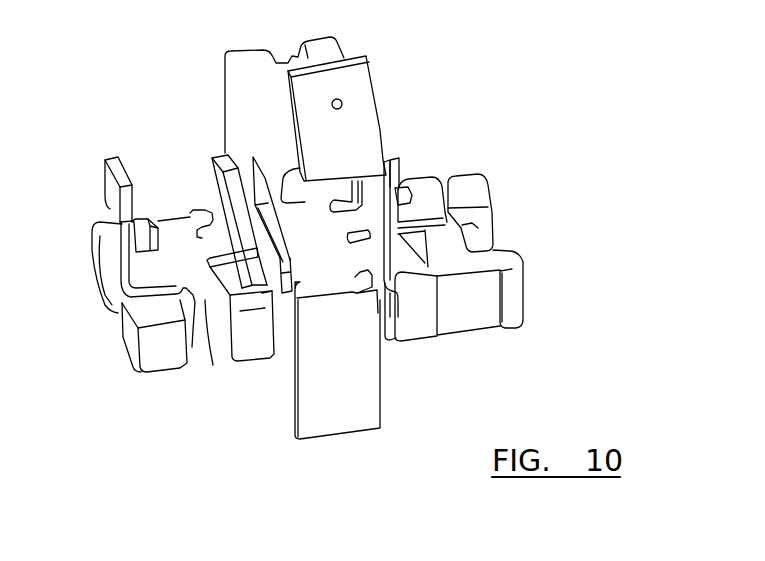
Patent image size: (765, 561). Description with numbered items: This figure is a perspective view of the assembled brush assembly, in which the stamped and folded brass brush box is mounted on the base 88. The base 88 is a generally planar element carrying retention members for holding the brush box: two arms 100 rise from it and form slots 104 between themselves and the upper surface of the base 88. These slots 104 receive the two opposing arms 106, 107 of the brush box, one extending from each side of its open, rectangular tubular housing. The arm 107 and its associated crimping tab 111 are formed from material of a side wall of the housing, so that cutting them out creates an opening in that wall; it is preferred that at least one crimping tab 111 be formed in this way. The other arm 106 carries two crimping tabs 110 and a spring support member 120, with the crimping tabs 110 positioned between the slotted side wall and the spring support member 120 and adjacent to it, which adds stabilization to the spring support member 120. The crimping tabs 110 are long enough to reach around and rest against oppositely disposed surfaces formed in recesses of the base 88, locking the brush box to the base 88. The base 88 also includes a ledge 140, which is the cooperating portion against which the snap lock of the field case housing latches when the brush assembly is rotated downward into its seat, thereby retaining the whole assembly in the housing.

The base 88 is at (507, 265).
The arms 100 is at (214, 192).
The slots 104 is at (207, 203).
The opposing arm 106 is at (263, 300).
The opposing arm 107 is at (402, 190).
The crimping tabs 110 is at (176, 227).
The crimping tab 111 is at (422, 192).
The spring support member 120 is at (117, 210).
The ledge 140 is at (465, 238).